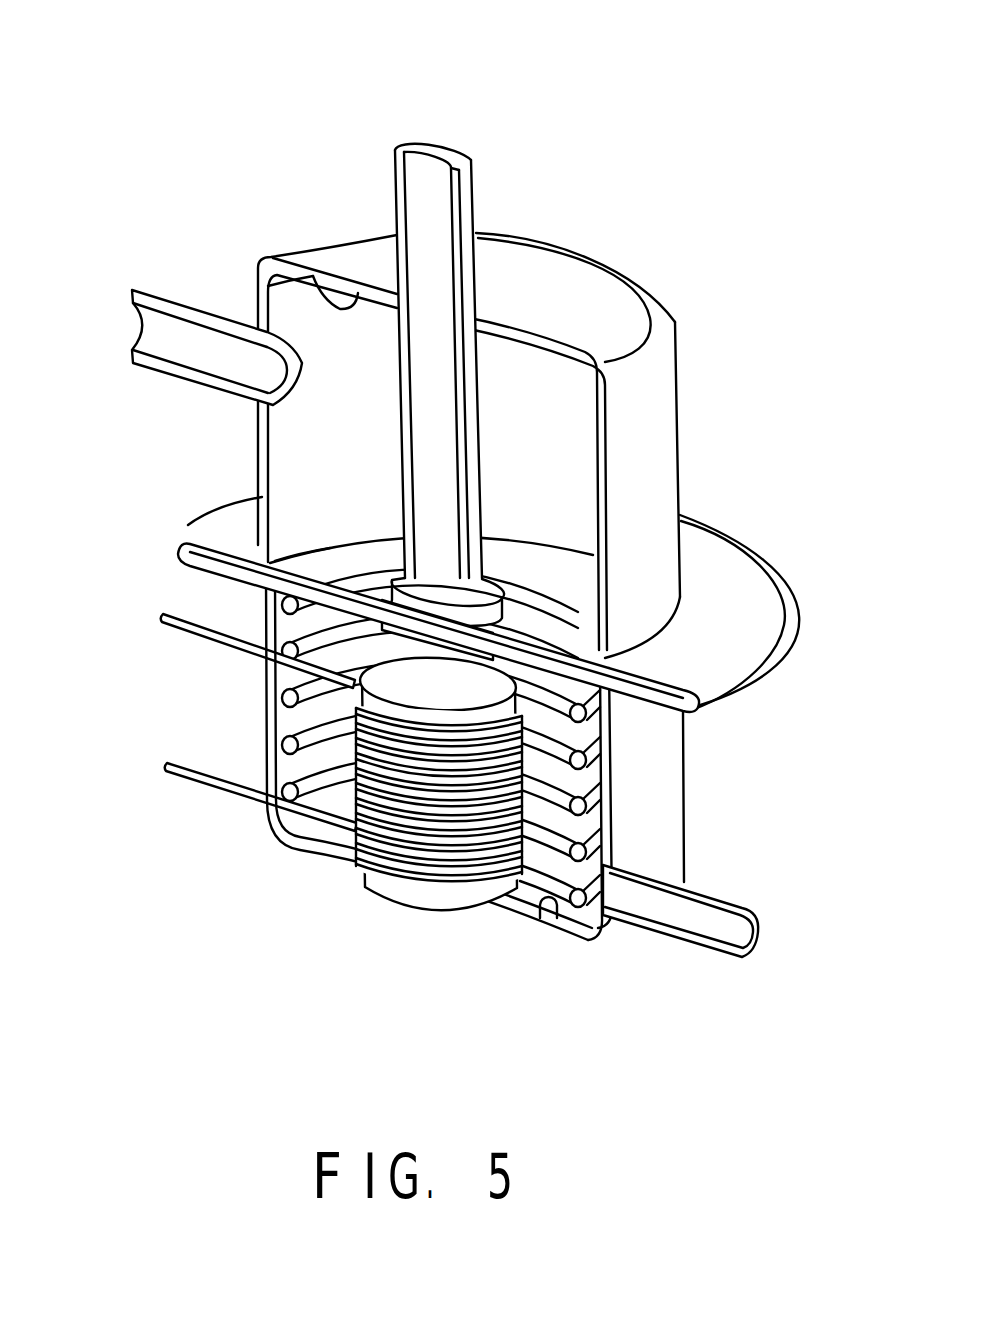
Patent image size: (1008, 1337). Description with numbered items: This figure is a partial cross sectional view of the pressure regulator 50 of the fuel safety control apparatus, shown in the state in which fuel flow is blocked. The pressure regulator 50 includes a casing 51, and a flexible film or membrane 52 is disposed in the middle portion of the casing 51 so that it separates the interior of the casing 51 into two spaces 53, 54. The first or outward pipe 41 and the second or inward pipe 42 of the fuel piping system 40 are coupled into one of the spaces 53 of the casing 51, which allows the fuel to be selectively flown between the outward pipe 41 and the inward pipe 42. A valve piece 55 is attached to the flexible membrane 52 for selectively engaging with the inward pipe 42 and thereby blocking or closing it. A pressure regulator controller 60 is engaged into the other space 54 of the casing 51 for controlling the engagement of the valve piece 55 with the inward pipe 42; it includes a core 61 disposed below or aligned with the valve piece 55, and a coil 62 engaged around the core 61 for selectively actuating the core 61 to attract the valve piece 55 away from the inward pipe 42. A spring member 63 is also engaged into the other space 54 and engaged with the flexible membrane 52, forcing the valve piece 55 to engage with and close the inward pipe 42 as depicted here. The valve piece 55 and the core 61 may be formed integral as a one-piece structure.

The fuel piping system 40 is at (184, 333).
The first or outward pipe 41 is at (202, 339).
The second or inward pipe 42 is at (428, 178).
The pressure regulator 50 is at (493, 587).
The casing 51 is at (680, 431).
The flexible film or membrane 52 is at (337, 560).
The space 53 is at (323, 285).
The space 54 is at (543, 897).
The valve piece 55 is at (493, 610).
The pressure regulator controller 60 is at (362, 851).
The core 61 is at (405, 897).
The coil 62 is at (450, 853).
The spring member 63 is at (325, 778).